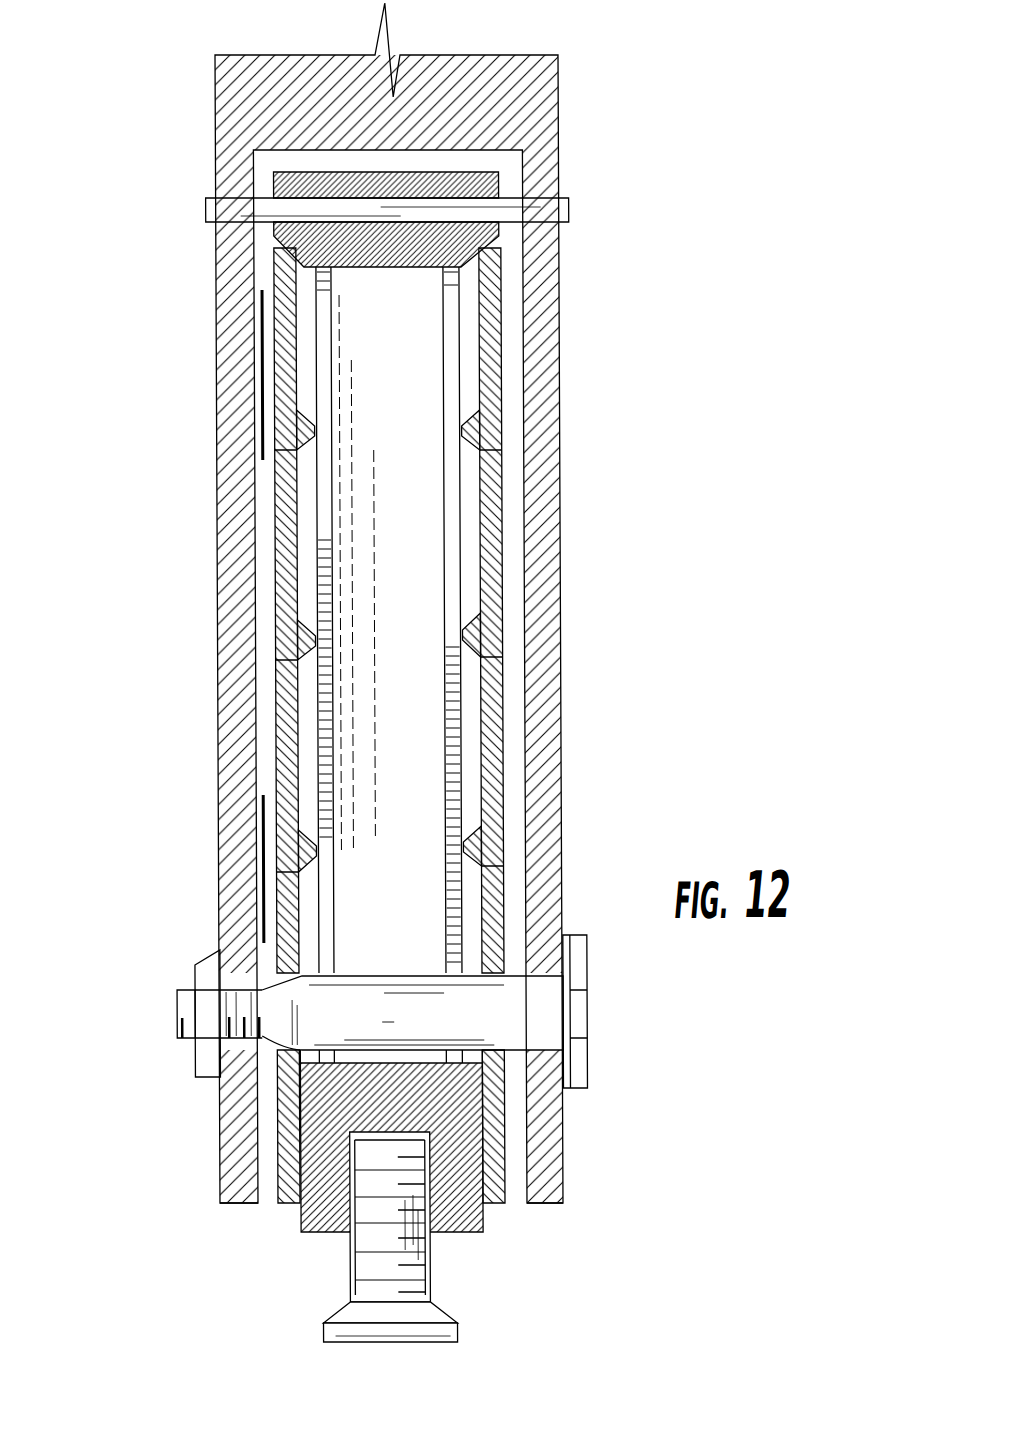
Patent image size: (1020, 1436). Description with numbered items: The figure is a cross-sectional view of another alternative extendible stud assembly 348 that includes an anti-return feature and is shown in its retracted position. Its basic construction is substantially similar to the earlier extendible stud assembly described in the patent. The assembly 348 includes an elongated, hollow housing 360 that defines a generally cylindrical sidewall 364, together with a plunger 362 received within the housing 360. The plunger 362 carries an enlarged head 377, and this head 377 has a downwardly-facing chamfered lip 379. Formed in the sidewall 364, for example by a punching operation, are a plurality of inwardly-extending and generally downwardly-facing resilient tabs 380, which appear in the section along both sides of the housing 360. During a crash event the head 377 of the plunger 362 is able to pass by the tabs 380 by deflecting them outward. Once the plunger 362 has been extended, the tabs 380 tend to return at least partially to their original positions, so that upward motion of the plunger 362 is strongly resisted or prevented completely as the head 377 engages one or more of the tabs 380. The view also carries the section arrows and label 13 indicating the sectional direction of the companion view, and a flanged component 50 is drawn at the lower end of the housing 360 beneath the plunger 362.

The extendible stud assembly 348 is at (291, 1255).
The enlarged head 377 is at (450, 175).
The chamfered lip 379 is at (287, 242).
The resilient tabs 380 is at (485, 434).
The cylindrical sidewall 364 is at (492, 722).
The plunger 362 is at (430, 797).
The hollow housing 360 is at (490, 1203).
The vial 50 is at (424, 1313).
The section line 13 is at (239, 332).